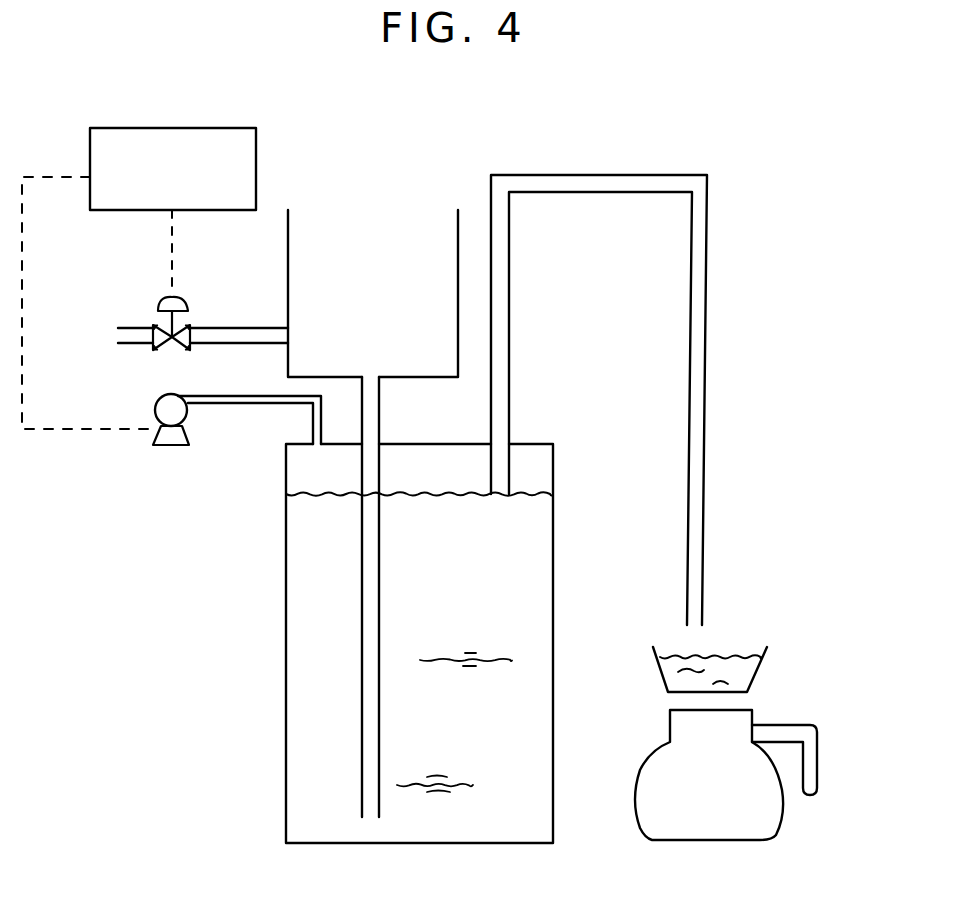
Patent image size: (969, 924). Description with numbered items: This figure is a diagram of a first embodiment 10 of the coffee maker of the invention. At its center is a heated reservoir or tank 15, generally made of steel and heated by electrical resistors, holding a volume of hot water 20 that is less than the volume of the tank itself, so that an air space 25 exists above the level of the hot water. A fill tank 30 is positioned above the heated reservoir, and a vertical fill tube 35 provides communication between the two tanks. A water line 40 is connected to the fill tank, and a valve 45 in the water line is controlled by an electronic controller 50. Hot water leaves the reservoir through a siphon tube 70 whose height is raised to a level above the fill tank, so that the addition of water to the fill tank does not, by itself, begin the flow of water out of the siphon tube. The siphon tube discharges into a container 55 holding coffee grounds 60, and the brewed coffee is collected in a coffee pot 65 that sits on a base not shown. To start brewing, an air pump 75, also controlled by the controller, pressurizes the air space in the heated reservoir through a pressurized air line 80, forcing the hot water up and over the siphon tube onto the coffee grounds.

The first embodiment of the coffee maker 10 is at (776, 124).
The heated reservoir or tank 15 is at (497, 843).
The hot water 20 is at (497, 587).
The air space 25 is at (447, 483).
The fill tank 30 is at (288, 268).
The vertical fill tube 35 is at (379, 407).
The water line 40 is at (127, 327).
The valve 45 is at (160, 349).
The electronic controller 50 is at (152, 128).
The container 55 is at (765, 650).
The coffee grounds 60 is at (740, 669).
The coffee pot 65 is at (730, 840).
The siphon tube 70 is at (529, 175).
The air pump 75 is at (190, 420).
The pressurized air line 80 is at (257, 404).